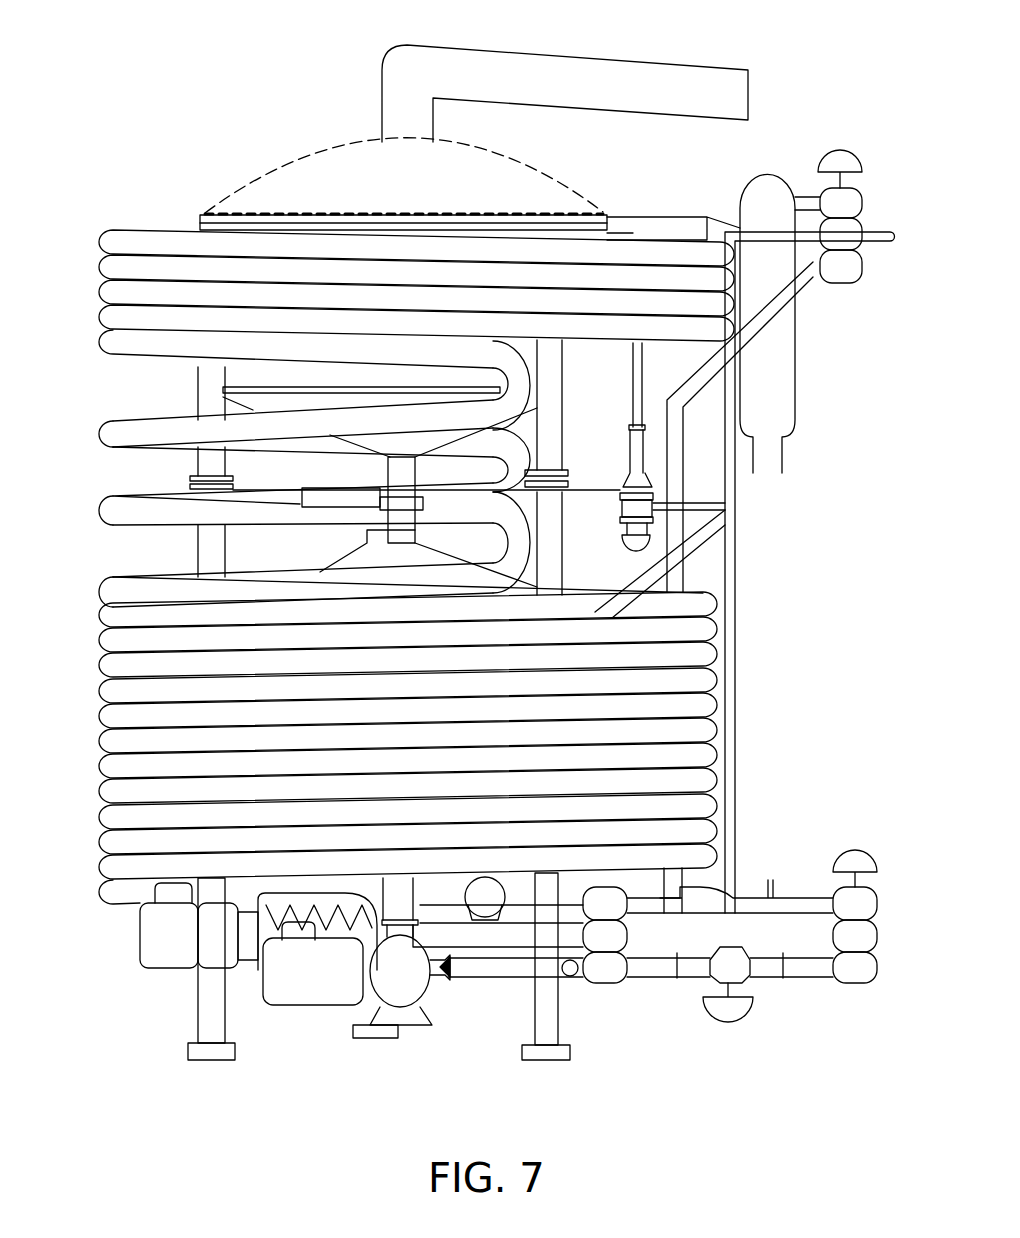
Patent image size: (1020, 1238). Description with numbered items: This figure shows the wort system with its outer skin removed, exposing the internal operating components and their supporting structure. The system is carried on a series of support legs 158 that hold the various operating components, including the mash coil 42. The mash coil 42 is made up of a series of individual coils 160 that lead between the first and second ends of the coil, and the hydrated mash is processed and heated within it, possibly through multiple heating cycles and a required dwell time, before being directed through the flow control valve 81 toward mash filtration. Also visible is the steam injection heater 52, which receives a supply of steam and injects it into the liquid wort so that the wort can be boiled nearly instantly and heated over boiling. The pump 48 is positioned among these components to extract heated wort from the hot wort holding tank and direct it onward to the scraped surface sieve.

The mash coil 42 is at (120, 232).
The individual coils 160 is at (103, 594).
The steam injection heater 52 is at (625, 507).
The pump 48 is at (397, 977).
The support legs 158 is at (558, 1022).
The flow control valve 81 is at (731, 968).